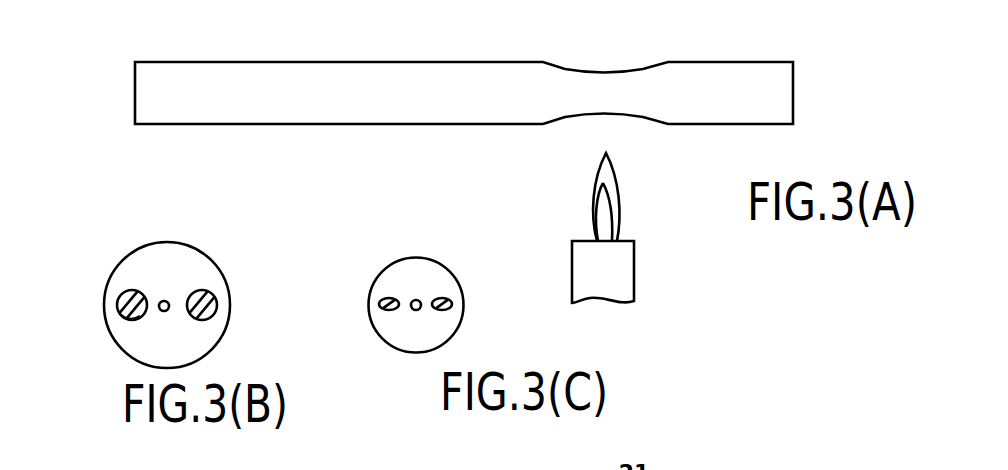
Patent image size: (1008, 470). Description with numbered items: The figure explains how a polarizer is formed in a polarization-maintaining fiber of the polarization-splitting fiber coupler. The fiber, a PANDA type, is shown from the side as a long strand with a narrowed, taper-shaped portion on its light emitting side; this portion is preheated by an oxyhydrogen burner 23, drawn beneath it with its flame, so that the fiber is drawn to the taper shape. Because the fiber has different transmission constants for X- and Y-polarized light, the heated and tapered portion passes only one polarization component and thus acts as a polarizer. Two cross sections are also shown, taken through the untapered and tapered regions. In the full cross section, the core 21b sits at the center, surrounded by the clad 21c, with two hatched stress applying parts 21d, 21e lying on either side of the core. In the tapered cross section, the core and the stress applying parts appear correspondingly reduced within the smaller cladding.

The core 21b is at (163, 300).
The clad 21c is at (120, 273).
The stress applying part 21d is at (128, 318).
The stress applying part 21e is at (219, 316).
The oxyhydrogen burner 23 is at (636, 254).